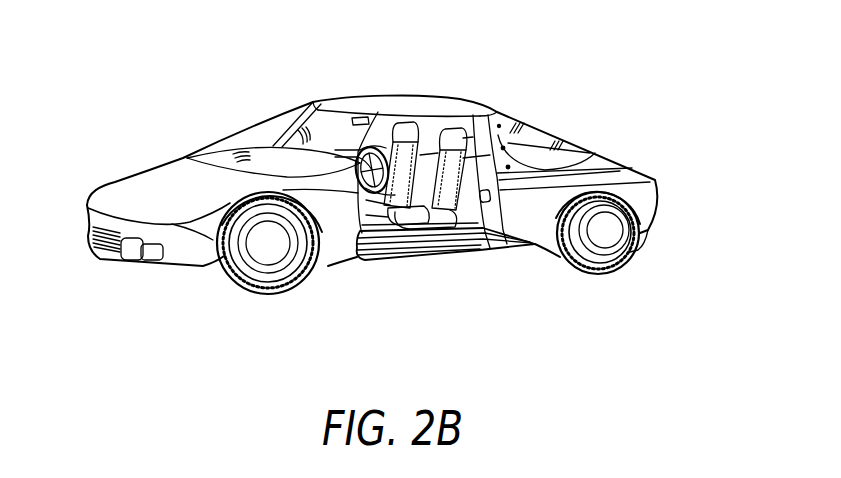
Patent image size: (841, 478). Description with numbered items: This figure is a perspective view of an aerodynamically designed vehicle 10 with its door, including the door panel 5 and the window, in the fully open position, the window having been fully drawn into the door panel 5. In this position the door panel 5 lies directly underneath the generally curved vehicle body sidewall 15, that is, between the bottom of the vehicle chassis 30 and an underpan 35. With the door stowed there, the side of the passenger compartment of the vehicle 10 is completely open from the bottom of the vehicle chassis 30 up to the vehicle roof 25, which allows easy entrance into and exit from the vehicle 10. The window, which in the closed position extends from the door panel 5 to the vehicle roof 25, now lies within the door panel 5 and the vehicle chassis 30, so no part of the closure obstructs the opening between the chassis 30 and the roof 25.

The vehicle 10 is at (530, 110).
The vehicle roof 25 is at (367, 107).
The vehicle body sidewall 15 is at (548, 230).
The vehicle chassis 30 is at (490, 250).
The door panel 5 is at (420, 248).
The underpan 35 is at (388, 262).